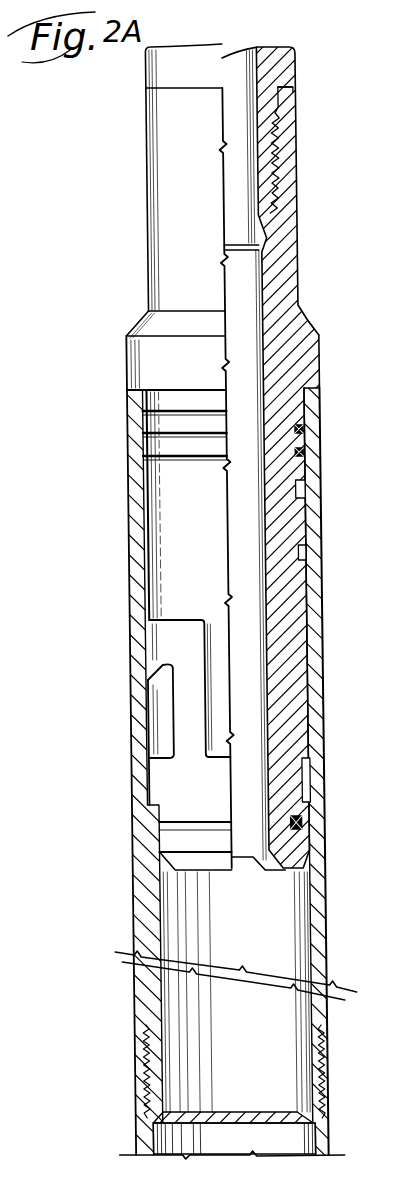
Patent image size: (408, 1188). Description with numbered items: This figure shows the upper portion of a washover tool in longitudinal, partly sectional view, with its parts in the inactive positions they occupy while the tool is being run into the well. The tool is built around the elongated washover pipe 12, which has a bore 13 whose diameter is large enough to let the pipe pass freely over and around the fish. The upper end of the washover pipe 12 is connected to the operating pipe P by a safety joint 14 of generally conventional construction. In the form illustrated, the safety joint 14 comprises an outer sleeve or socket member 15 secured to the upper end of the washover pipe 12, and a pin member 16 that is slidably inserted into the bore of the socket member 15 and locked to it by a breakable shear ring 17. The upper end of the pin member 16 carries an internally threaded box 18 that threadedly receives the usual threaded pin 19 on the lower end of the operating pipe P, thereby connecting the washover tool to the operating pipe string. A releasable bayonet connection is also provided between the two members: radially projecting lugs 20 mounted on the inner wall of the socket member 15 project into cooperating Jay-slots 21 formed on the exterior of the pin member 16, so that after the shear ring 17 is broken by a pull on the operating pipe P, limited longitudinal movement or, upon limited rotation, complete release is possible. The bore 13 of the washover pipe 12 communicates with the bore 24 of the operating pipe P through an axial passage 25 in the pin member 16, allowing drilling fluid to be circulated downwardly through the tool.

The operating pipe P is at (303, 65).
The bore 24 is at (262, 106).
The threaded pin 19 is at (270, 147).
The internally threaded box 18 is at (293, 176).
The axial passage 25 is at (260, 274).
The breakable shear ring 17 is at (308, 403).
The radially projecting lugs 20 is at (298, 510).
The Jay-slots 21 is at (300, 563).
The safety joint 14 is at (324, 592).
The pin member 16 is at (288, 627).
The outer sleeve or socket member 15 is at (317, 660).
The bore 13 is at (315, 1133).
The washover pipe 12 is at (316, 1143).